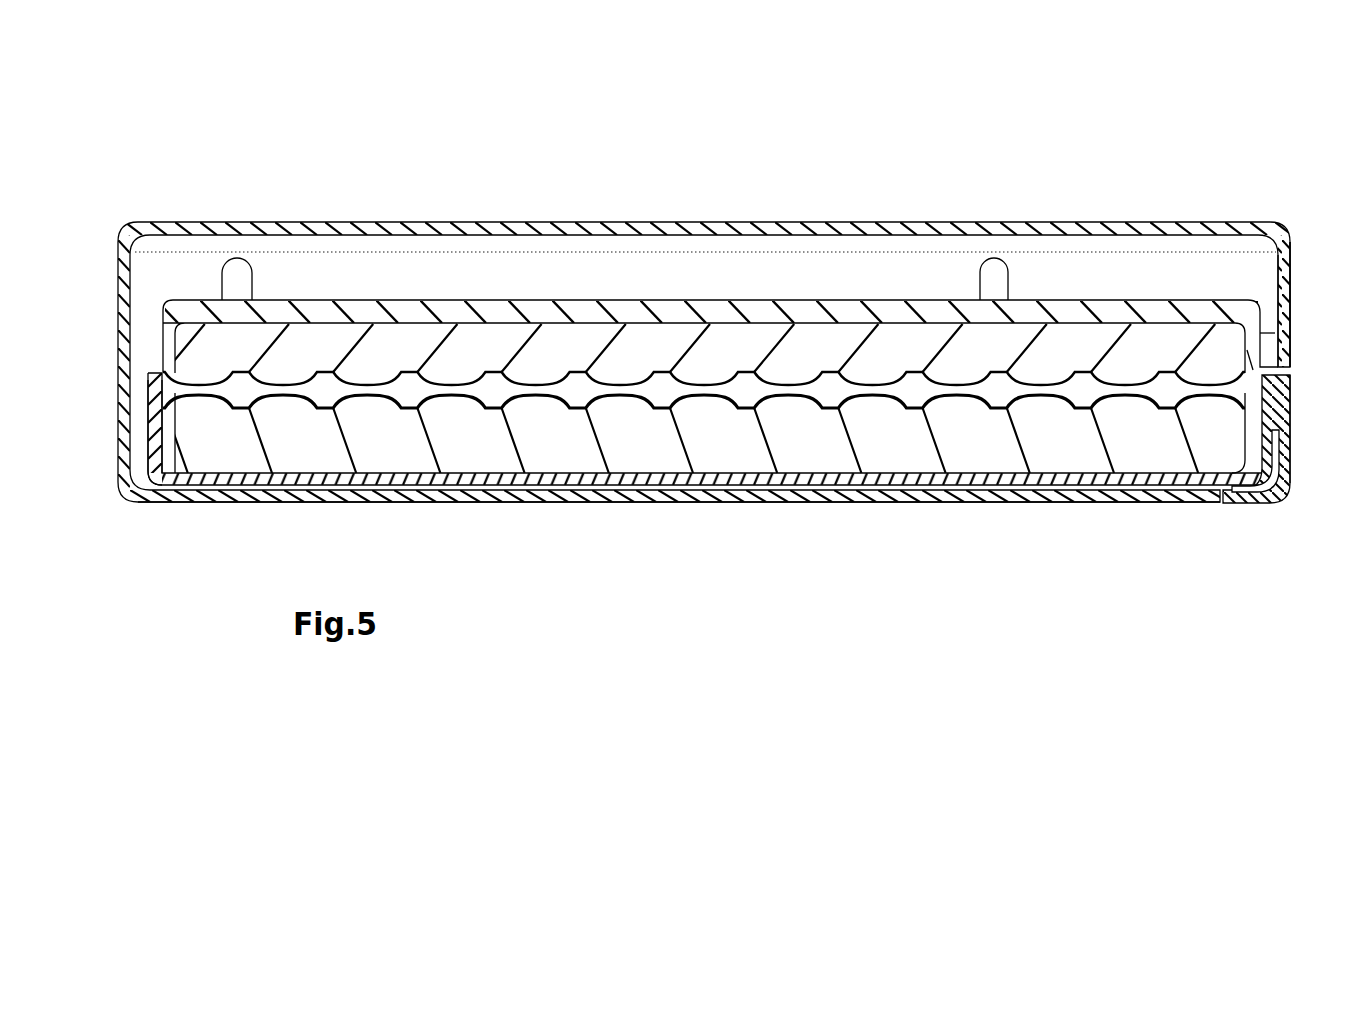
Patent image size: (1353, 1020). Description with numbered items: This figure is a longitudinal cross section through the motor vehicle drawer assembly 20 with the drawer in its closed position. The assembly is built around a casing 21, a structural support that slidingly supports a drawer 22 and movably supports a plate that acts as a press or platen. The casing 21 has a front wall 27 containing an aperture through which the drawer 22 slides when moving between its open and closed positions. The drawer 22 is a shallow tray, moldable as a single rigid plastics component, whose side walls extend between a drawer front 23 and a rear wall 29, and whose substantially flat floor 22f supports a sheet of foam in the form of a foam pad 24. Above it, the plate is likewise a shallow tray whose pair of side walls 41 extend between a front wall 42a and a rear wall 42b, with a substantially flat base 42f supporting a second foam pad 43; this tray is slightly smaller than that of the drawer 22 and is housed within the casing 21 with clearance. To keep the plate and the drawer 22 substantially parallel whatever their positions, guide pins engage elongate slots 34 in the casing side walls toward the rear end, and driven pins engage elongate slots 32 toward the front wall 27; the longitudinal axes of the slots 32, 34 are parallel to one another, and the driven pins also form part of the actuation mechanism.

The motor vehicle drawer assembly 20 is at (687, 505).
The casing 21 is at (799, 502).
The drawer 22 is at (1248, 507).
The floor 22f is at (1013, 453).
The drawer front 23 is at (1290, 428).
The foam pad 24 is at (893, 432).
The front wall 27 is at (1290, 288).
The rear wall 29 is at (150, 432).
The elongate slots 32 is at (990, 258).
The elongate slots 34 is at (232, 258).
The side walls 41 is at (356, 300).
The front wall 42a is at (1265, 330).
The rear wall 42b is at (162, 326).
The base 42f is at (660, 300).
The foam pad 43 is at (555, 360).